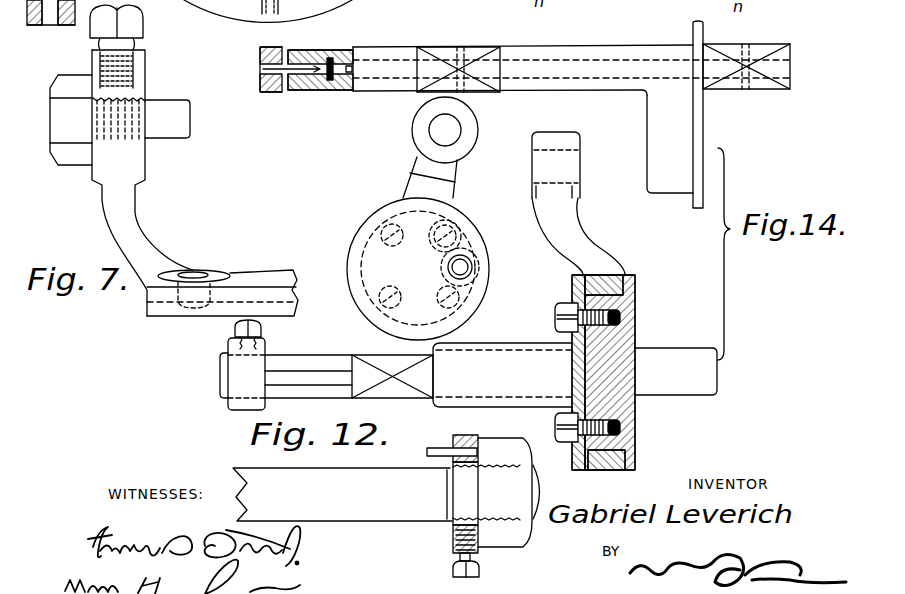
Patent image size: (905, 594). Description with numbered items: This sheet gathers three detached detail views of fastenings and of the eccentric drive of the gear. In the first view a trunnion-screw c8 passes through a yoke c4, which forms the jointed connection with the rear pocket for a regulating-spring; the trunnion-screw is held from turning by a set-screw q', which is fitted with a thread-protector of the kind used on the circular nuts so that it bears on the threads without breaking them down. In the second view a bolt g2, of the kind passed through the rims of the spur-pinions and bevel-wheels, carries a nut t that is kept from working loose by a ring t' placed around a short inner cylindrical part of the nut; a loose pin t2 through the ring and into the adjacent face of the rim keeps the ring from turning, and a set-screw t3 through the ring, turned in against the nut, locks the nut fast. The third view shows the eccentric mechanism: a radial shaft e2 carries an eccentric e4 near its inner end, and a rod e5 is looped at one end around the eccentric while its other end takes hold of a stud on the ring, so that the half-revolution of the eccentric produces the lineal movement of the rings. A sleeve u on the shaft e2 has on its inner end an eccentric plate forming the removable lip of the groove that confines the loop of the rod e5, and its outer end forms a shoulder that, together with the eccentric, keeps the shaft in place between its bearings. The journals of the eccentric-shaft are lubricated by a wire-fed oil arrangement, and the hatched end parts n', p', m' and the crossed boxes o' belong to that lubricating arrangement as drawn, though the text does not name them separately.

In FIG. 7, the trunnion-screw c8 is at (71, 120).
In FIG. 7, the set-screw q' is at (133, 27).
In FIG. 7, the yoke c4 is at (140, 236).
In FIG. 14, the slotted nut n' is at (290, 84).
In FIG. 14, the pin p' is at (330, 84).
In FIG. 14, the spring seat m' is at (369, 68).
In FIG. 14, the journal box o' is at (603, 66).
In FIG. 14, the radial shaft e2 is at (572, 53).
In FIG. 14, the eccentric e4 is at (633, 338).
In FIG. 14, the rod e5 is at (432, 192).
In FIG. 14, the sleeve u is at (367, 245).
In FIG. 12, the loose pin t2 is at (438, 448).
In FIG. 12, the ring t' is at (449, 514).
In FIG. 12, the nut t is at (496, 492).
In FIG. 12, the set-screw t3 is at (480, 568).
In FIG. 12, the bolt g2 is at (342, 494).